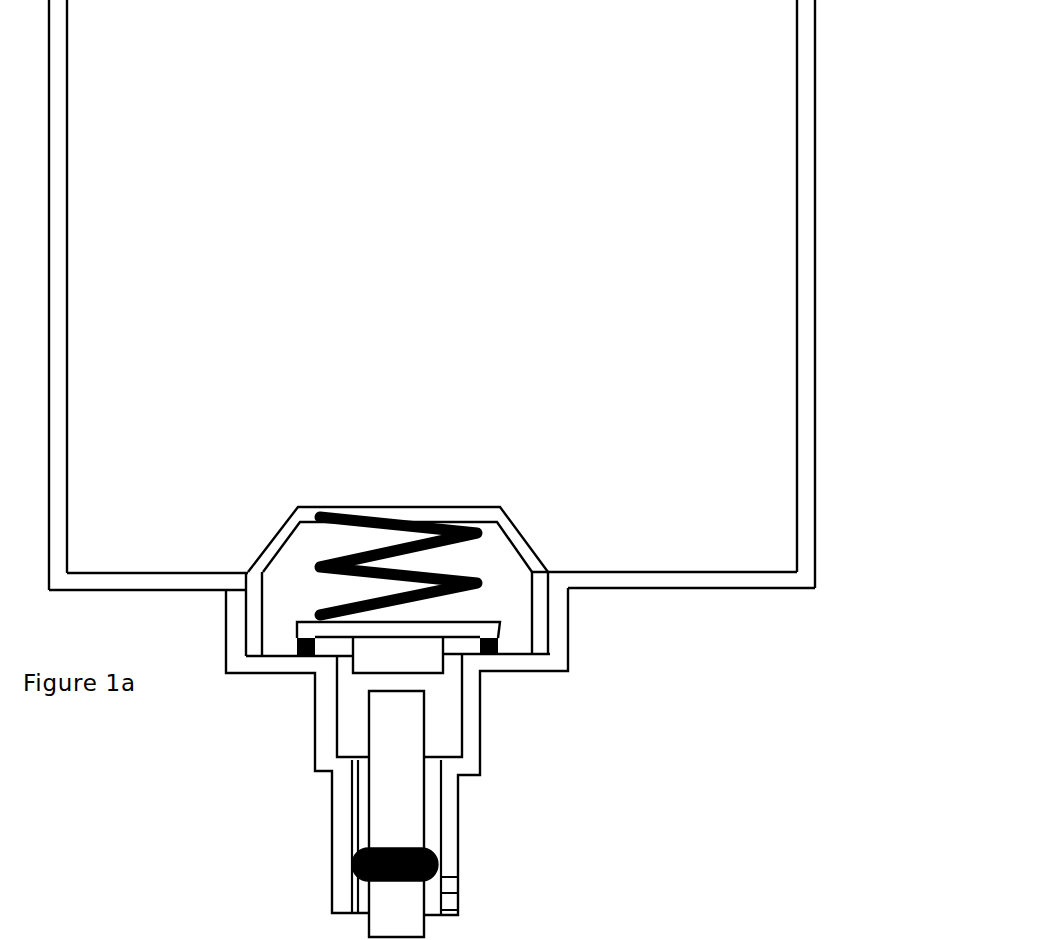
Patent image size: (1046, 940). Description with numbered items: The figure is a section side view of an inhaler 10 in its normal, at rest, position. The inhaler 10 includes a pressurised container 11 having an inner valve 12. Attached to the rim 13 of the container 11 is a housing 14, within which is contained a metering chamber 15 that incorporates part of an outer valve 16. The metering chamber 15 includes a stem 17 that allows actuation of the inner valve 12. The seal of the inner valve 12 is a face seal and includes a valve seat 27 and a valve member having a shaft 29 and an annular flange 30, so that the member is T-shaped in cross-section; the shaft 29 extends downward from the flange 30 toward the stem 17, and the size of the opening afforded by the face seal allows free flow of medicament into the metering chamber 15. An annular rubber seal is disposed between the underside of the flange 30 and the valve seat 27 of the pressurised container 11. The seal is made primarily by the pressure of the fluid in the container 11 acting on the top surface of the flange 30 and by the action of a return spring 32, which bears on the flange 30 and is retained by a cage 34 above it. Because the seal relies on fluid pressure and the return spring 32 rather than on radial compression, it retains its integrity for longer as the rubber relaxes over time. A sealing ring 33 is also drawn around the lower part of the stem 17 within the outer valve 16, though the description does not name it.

The inhaler 10 is at (836, 213).
The pressurised container 11 is at (817, 357).
The inner valve 12 is at (525, 604).
The rim 13 is at (570, 650).
The housing 14 is at (313, 742).
The metering chamber 15 is at (352, 692).
The outer valve 16 is at (490, 880).
The stem 17 is at (387, 807).
The valve seat 27 is at (507, 659).
The shaft 29 is at (410, 657).
The annular flange 30 is at (500, 622).
The return spring 32 is at (333, 560).
The O-ring 33 is at (438, 862).
The cage 34 is at (497, 468).